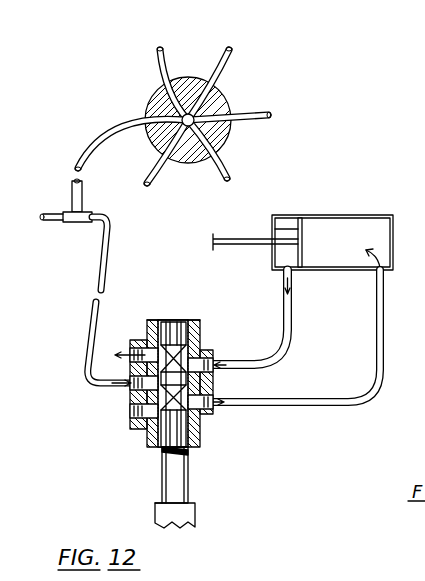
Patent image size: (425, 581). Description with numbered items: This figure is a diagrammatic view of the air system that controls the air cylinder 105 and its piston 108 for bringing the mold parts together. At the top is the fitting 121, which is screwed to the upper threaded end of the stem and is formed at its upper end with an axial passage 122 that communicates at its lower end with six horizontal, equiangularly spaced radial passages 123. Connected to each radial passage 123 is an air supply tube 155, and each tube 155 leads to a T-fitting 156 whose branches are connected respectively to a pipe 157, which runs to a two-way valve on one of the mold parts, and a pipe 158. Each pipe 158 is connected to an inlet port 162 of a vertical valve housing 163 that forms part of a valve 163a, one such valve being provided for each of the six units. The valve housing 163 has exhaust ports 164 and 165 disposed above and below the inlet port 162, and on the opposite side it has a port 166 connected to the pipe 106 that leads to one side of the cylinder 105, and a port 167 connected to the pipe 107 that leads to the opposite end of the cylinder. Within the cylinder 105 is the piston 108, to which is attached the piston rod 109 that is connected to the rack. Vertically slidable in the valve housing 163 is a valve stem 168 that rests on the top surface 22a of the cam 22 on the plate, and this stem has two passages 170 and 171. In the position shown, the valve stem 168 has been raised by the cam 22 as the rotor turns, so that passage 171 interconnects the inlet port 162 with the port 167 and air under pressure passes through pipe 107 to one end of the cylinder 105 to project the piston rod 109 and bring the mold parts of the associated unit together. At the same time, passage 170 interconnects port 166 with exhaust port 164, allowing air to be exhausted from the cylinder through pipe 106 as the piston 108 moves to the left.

The cam 22 is at (195, 511).
The top surface of the cam 22a is at (160, 503).
The air cylinder 105 is at (390, 200).
The pipe 106 is at (293, 289).
The pipe 107 is at (385, 287).
The piston 108 is at (283, 226).
The piston rod 109 is at (243, 228).
The fitting 121 is at (223, 138).
The axial passage 122 is at (195, 124).
The radial passages 123 is at (173, 100).
The air supply tube 155 is at (102, 128).
The T-fitting 156 is at (70, 222).
The pipe 157 is at (50, 212).
The pipe 158 is at (111, 228).
The inlet port 162 is at (131, 398).
The valve housing 163 is at (167, 377).
The valve 163a is at (206, 313).
The exhaust port 164 is at (145, 340).
The exhaust port 165 is at (134, 425).
The port 166 is at (208, 350).
The port 167 is at (208, 416).
The valve stem 168 is at (186, 490).
The passage 170 is at (178, 355).
The passage 171 is at (165, 460).